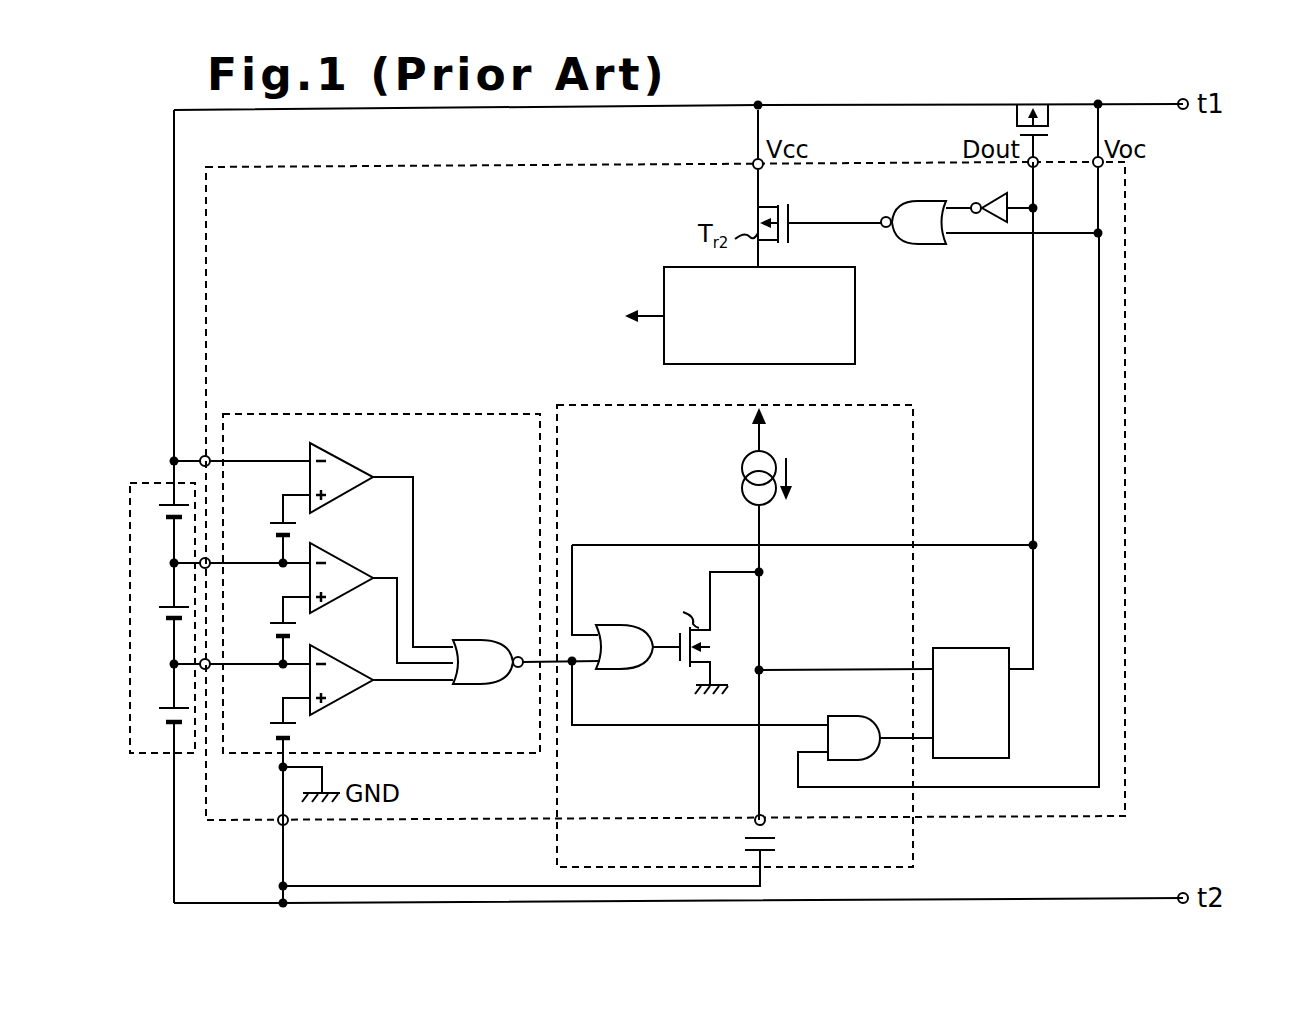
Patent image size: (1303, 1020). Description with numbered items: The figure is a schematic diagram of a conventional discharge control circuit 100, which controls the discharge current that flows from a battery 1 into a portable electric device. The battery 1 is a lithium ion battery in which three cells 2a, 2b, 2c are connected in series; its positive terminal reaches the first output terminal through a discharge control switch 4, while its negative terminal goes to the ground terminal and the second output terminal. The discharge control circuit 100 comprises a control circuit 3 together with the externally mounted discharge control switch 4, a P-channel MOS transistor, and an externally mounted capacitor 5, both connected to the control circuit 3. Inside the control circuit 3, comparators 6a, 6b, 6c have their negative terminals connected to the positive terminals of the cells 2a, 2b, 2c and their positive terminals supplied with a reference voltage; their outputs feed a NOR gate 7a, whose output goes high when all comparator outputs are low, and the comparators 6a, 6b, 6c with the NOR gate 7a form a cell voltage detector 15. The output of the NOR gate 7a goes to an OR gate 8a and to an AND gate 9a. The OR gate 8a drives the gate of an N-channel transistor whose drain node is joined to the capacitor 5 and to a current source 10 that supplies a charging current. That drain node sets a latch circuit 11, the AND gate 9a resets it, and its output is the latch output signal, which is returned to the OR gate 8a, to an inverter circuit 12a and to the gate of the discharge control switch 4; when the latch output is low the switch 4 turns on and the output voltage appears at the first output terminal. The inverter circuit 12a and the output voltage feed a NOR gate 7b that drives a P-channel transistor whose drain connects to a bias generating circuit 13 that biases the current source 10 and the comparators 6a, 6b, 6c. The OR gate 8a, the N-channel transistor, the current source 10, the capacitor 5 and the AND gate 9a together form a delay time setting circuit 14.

The battery 1 is at (152, 472).
The cell 2a is at (169, 505).
The cell 2b is at (167, 607).
The cell 2c is at (167, 708).
The control circuit 3 is at (1125, 258).
The discharge control switch 4 is at (1050, 113).
The capacitor 5 is at (776, 836).
The comparator 6a is at (357, 446).
The comparator 6b is at (357, 548).
The comparator 6c is at (357, 648).
The NOR gate 7a is at (488, 641).
The NOR gate 7b is at (925, 247).
The OR gate 8a is at (641, 626).
The AND gate 9a is at (852, 716).
The current source 10 is at (743, 464).
The latch circuit 11 is at (983, 648).
The inverter circuit 12a is at (992, 196).
The bias generating circuit 13 is at (855, 326).
The delay time setting circuit 14 is at (913, 445).
The cell voltage detector 15 is at (478, 413).
The discharge control circuit 100 is at (1190, 197).